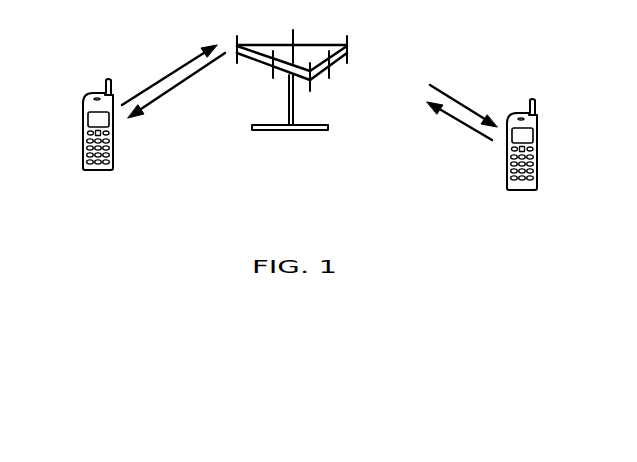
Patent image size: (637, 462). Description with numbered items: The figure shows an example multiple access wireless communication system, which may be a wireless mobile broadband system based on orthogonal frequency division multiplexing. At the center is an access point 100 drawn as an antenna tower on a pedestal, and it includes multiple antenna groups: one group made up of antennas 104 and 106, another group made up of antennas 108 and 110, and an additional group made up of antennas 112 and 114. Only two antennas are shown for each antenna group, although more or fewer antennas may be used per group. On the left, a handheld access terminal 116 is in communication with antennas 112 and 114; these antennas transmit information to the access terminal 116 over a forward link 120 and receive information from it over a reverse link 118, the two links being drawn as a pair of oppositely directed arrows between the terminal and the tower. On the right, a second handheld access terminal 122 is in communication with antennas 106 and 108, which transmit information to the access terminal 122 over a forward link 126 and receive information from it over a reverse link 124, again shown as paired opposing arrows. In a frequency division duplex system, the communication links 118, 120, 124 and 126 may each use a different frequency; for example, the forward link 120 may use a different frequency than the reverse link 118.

The access point 100 is at (275, 130).
The antenna 104 is at (310, 86).
The antenna 106 is at (330, 76).
The antenna 108 is at (348, 50).
The antenna 110 is at (293, 36).
The antenna 112 is at (237, 43).
The antenna 114 is at (273, 73).
The access terminal 116 is at (83, 110).
The reverse link 118 is at (177, 70).
The forward link 120 is at (167, 91).
The access terminal 122 is at (538, 135).
The reverse link 124 is at (466, 126).
The forward link 126 is at (462, 104).